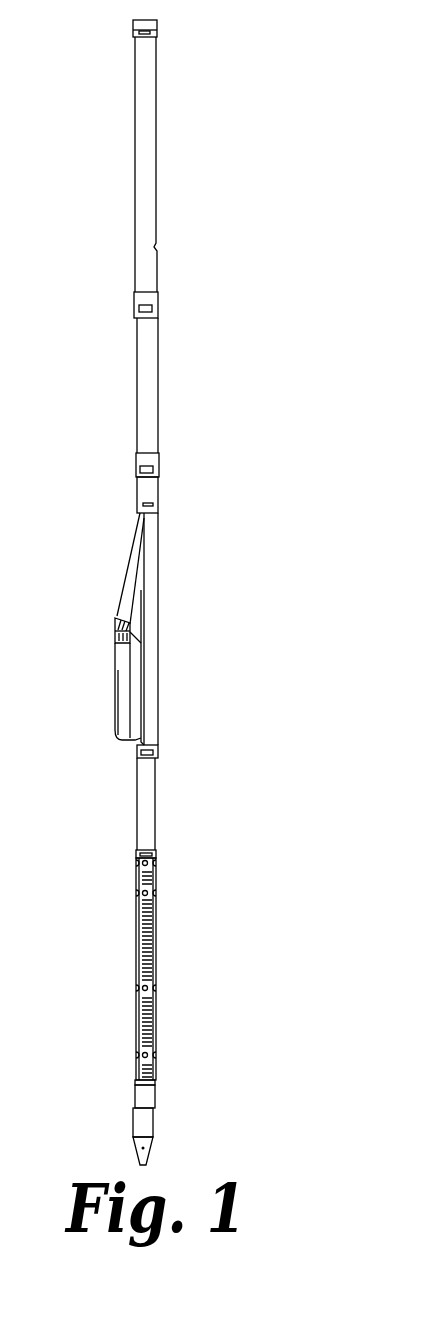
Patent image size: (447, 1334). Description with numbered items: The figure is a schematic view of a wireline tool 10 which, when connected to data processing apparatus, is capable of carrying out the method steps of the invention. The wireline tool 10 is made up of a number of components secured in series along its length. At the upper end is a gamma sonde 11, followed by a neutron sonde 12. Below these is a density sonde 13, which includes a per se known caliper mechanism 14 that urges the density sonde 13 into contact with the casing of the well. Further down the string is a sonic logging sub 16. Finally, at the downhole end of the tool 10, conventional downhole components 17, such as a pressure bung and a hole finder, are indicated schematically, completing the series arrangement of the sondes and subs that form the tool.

The wireline tool 10 is at (242, 699).
The gamma sonde 11 is at (147, 188).
The neutron sonde 12 is at (148, 405).
The density sonde 13 is at (117, 653).
The caliper mechanism 14 is at (158, 672).
The sonic logging sub 16 is at (148, 808).
The conventional downhole components 17 is at (143, 1098).